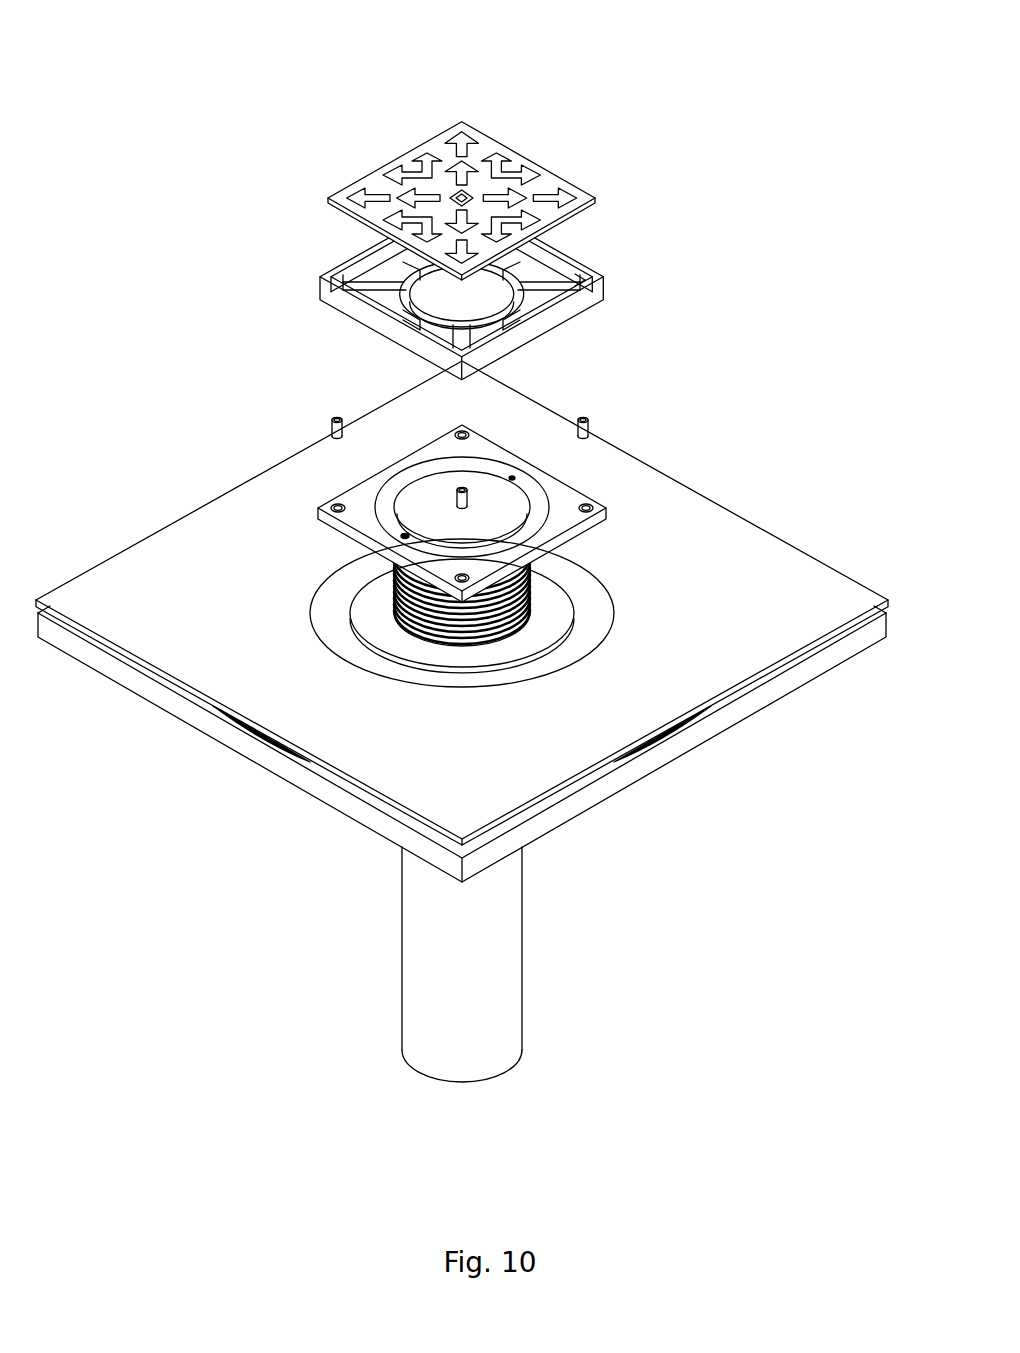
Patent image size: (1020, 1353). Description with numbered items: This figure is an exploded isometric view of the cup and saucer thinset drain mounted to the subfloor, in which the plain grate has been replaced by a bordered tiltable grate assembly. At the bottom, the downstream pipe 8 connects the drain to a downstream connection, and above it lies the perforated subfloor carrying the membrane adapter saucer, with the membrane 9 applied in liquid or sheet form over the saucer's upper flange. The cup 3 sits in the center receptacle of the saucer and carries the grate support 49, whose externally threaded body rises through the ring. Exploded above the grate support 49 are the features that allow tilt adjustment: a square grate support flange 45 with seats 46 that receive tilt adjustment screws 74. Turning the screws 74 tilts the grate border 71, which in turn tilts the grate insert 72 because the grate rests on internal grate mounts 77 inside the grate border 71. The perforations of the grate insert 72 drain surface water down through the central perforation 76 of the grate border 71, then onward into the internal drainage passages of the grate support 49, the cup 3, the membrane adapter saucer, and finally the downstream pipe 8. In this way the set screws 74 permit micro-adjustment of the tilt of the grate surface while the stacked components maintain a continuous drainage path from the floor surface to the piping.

The grate insert 72 is at (492, 183).
The grate border 71 is at (603, 277).
The internal grate mounts 77 is at (580, 280).
The central perforation 76 is at (493, 283).
The tilt adjustment screws 74 is at (590, 430).
The square grate support flange 45 is at (560, 513).
The seats 46 is at (595, 516).
The grate support 49 is at (534, 597).
The cup 3 is at (398, 642).
The membrane 9 is at (488, 790).
The pipe 8 is at (483, 1028).